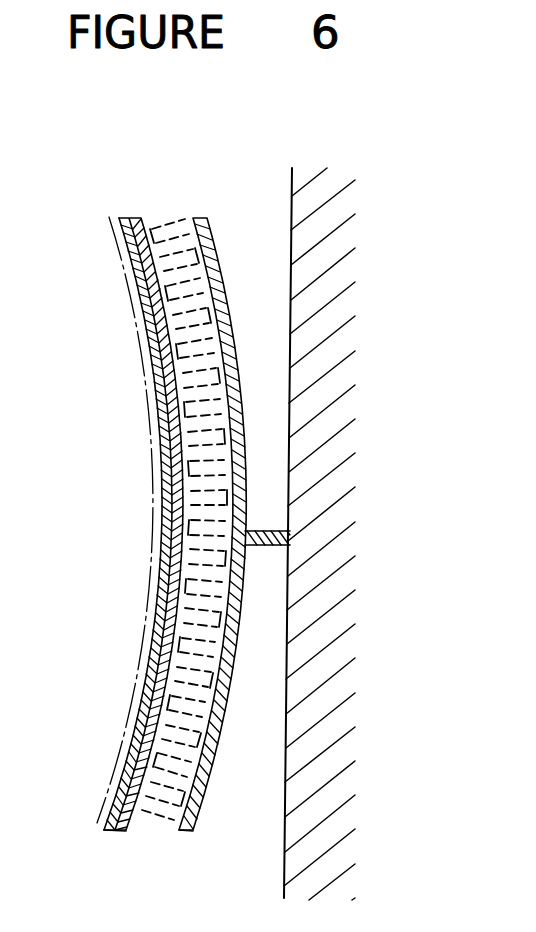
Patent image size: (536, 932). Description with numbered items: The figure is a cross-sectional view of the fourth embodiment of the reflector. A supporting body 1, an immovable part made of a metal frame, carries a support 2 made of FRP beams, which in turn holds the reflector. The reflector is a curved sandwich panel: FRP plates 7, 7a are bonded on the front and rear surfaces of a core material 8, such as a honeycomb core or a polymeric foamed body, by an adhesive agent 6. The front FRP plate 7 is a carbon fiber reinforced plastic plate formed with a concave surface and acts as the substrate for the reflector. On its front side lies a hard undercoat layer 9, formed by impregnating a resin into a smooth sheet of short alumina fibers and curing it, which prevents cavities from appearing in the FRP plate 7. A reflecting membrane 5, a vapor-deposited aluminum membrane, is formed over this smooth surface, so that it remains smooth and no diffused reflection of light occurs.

The supporting body 1 is at (290, 813).
The support 2 is at (265, 546).
The reflecting membrane 5 is at (113, 237).
The adhesive agent 6 is at (128, 834).
The FRP plate 7 is at (128, 220).
The FRP plate 7a is at (197, 218).
The core material 8 is at (165, 222).
The hard undercoat layer 9 is at (118, 220).